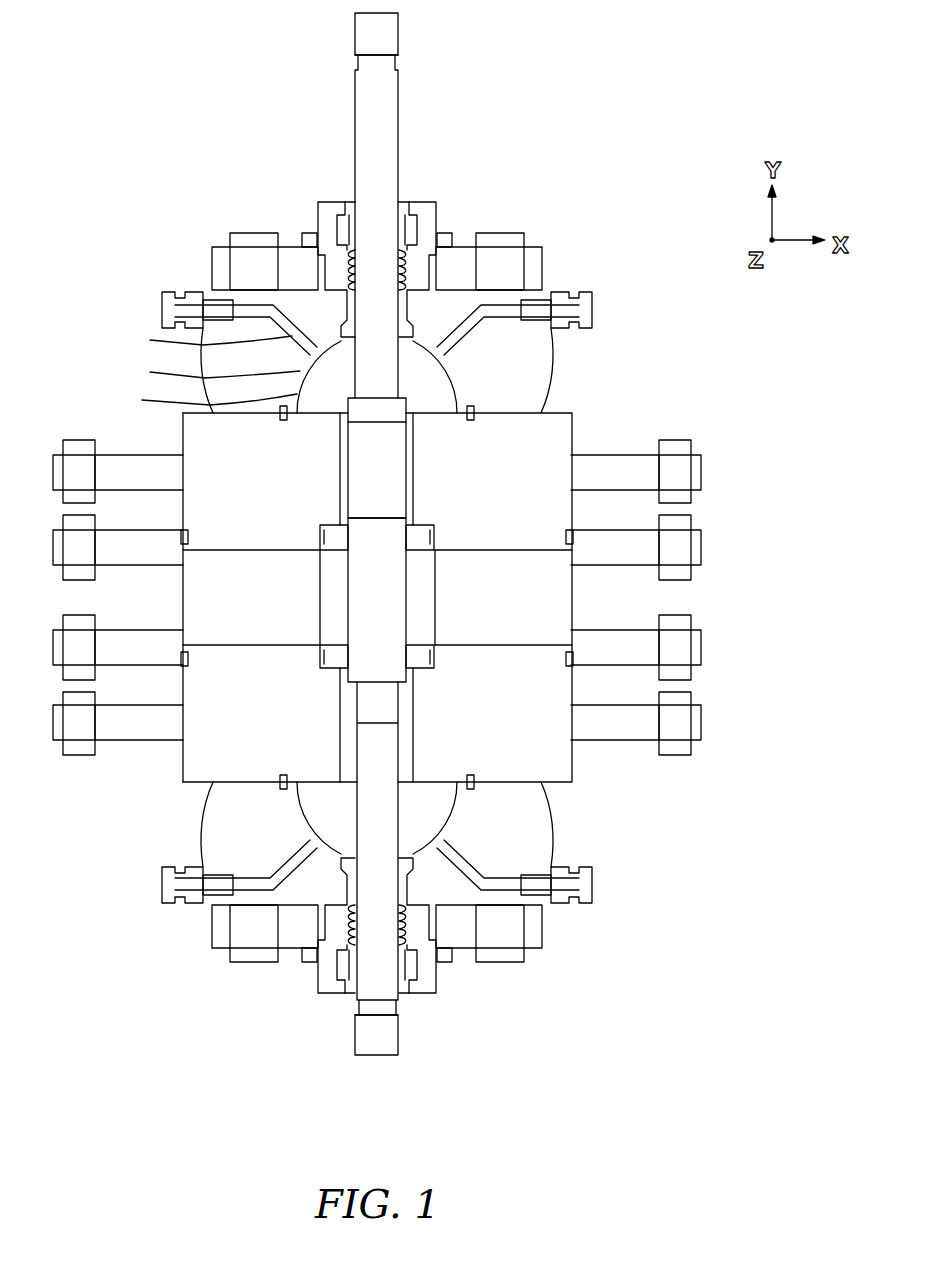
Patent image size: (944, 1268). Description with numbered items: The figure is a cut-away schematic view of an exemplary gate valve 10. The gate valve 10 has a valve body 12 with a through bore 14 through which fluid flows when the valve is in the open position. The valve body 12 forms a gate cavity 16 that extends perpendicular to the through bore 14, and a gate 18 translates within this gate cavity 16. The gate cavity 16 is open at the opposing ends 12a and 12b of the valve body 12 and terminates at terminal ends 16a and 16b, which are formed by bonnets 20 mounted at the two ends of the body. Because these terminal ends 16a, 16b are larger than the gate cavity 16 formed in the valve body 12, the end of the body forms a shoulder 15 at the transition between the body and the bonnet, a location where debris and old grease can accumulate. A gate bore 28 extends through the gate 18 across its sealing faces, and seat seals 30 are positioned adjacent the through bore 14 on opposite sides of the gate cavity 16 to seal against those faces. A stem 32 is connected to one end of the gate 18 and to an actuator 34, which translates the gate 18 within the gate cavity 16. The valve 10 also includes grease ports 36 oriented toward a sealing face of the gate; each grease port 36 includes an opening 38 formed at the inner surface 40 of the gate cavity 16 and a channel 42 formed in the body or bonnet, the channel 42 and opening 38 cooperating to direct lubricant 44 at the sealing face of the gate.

The gate valve 10 is at (578, 112).
The valve body 12 is at (572, 752).
The end of valve body 12a is at (574, 412).
The end of valve body 12b is at (237, 790).
The through bore 14 is at (513, 607).
The shoulder 15 is at (448, 393).
The gate cavity 16 is at (348, 730).
The terminal gate cavity end 16a is at (353, 392).
The terminal gate cavity end 16b is at (353, 822).
The gate 18 is at (372, 635).
The bonnet 20 is at (327, 290).
The gate bore 28 is at (393, 480).
The seat seal 30 is at (322, 545).
The stem 32 is at (372, 345).
The actuator 34 is at (400, 110).
The grease port 36 is at (126, 281).
The opening 38 is at (210, 377).
The inner surface 40 is at (205, 402).
The channel 42 is at (206, 342).
The lubricant 44 is at (412, 378).